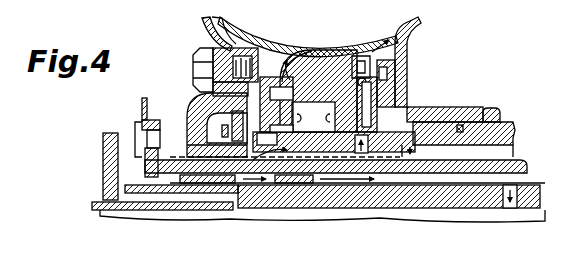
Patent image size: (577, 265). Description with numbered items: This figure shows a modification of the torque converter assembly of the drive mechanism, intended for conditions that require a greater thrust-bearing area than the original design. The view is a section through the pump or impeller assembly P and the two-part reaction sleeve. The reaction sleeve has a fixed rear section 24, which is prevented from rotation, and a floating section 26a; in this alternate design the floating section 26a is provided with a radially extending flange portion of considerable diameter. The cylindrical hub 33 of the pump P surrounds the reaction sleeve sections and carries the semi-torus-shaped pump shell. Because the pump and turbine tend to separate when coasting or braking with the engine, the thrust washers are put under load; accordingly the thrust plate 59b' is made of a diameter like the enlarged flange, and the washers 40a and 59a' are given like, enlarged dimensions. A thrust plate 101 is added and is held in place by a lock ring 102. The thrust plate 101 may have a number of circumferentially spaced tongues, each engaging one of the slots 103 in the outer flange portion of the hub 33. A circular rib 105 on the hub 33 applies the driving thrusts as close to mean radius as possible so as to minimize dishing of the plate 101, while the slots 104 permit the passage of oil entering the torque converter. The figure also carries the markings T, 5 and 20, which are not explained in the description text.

The terminal wires T is at (200, 19).
The curved strip 5 is at (266, 42).
The slots 103 is at (300, 31).
The lock ring 102 is at (291, 44).
The thrust plate 101 is at (339, 43).
The pump or impeller assembly P is at (420, 20).
The slots 104 is at (410, 75).
The circular rib 105 is at (405, 97).
The thrust washer 40a is at (410, 104).
The hub 33 is at (477, 107).
The fixed rear section of reaction sleeve 24 is at (513, 132).
The thrust plate 59b' is at (170, 124).
The thrust washer 59a' is at (198, 125).
The floating section of reaction sleeve 26a is at (383, 135).
The base plate 20 is at (290, 198).